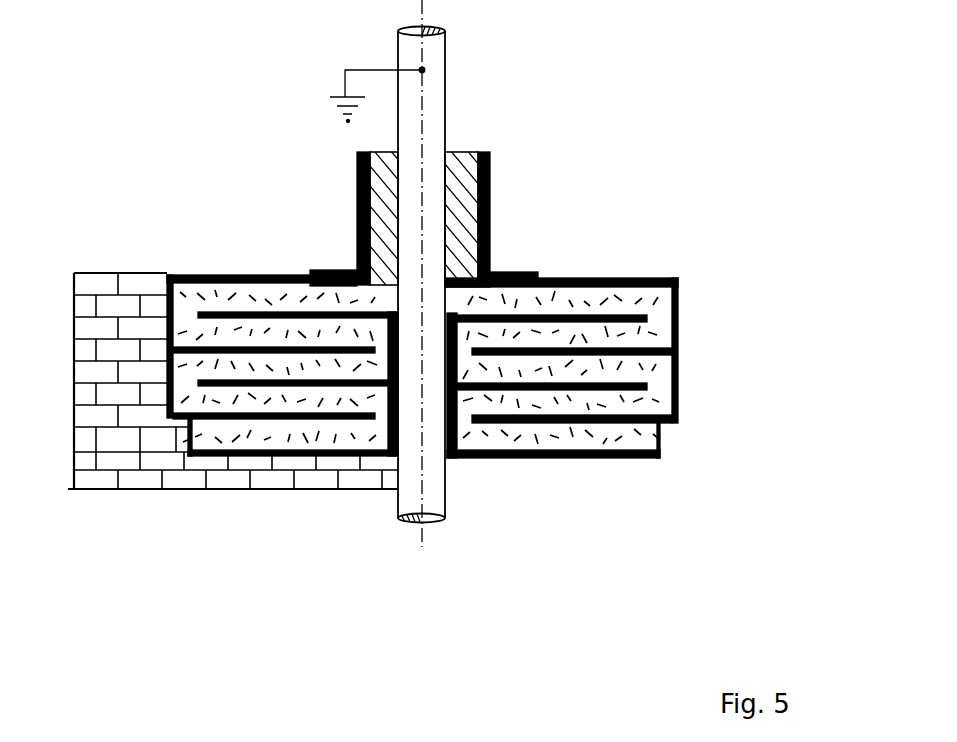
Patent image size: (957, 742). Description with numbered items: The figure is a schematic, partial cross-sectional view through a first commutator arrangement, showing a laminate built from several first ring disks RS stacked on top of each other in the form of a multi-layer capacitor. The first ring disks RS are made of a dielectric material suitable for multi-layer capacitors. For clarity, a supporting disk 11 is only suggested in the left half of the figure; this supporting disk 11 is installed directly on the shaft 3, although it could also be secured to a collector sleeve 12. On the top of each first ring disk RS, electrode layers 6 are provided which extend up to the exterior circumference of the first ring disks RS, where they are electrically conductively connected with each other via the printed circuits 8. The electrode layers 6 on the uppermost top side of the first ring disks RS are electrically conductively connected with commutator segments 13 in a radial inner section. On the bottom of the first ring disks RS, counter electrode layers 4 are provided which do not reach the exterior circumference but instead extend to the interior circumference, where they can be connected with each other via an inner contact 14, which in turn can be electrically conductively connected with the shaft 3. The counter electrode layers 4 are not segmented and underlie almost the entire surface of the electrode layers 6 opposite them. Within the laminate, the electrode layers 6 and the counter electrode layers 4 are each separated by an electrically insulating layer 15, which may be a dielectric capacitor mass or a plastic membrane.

The shaft 3 is at (430, 57).
The counter electrode layer 4 is at (550, 387).
The electrode layer 6 is at (657, 287).
The printed circuit 8 is at (678, 303).
The supporting disk 11 is at (118, 305).
The collector sleeve 12 is at (460, 170).
The commutator segment 13 is at (488, 180).
The inner contact 14 is at (500, 300).
The insulating layer 15 is at (557, 337).
The first ring disk RS is at (257, 253).